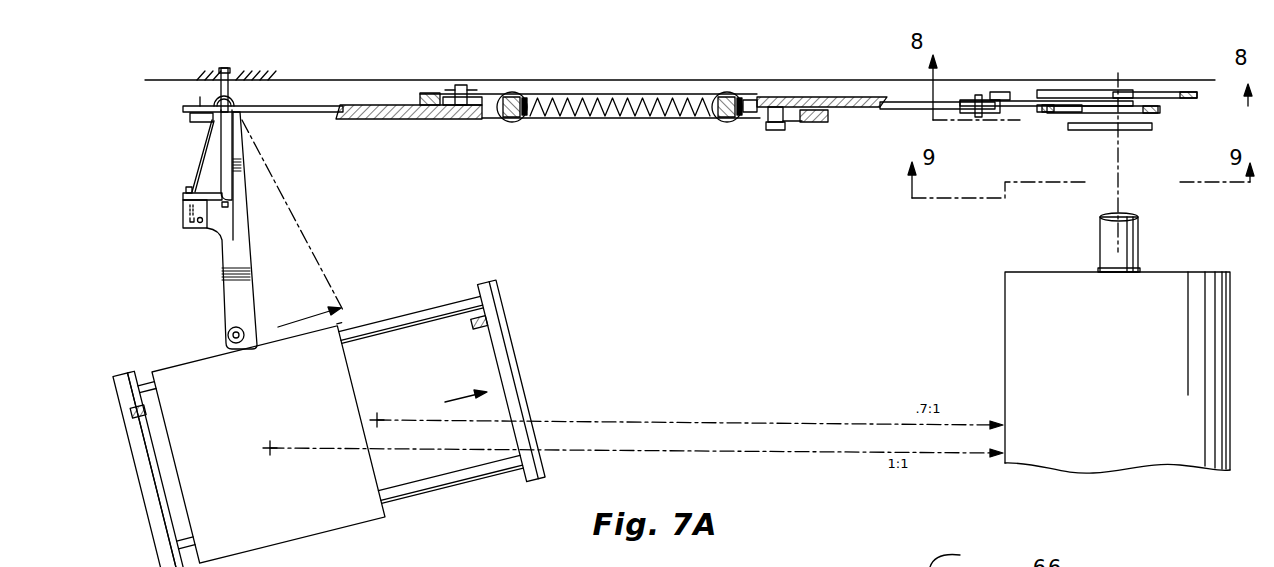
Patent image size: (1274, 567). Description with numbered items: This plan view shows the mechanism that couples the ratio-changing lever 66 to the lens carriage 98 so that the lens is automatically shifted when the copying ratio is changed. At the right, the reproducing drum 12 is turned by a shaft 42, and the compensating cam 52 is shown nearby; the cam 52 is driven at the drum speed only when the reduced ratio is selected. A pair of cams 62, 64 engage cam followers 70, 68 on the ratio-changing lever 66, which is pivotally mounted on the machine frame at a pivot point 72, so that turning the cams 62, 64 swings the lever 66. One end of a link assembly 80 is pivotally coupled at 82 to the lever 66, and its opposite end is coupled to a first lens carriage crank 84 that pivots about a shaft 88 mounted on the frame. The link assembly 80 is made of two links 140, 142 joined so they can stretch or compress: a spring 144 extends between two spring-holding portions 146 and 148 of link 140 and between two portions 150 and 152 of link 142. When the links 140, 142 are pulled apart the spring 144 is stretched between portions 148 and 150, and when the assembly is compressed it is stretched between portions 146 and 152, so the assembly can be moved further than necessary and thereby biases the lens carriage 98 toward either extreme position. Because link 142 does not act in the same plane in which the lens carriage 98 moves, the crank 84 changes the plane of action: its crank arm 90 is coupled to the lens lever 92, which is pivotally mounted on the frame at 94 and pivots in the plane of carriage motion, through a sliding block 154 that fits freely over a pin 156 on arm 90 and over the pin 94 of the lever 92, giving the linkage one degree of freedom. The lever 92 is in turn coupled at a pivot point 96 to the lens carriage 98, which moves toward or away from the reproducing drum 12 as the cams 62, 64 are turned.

The reproducing drum 12 is at (1207, 272).
The shaft 42 is at (1138, 233).
The compensating cam 52 is at (1110, 130).
The cam 62 is at (1073, 92).
The cam 64 is at (1160, 113).
The ratio-changing lever 66 is at (1027, 100).
The cam follower 68 is at (1045, 112).
The cam follower 70 is at (1127, 93).
The pivot point 72 is at (1000, 92).
The link assembly 80 is at (680, 125).
The pivot point 82 is at (970, 113).
The lens carriage crank 84 is at (227, 148).
The shaft 88 is at (235, 70).
The crank arm 90 is at (200, 192).
The lens lever 92 is at (247, 273).
The pivot 94 is at (237, 101).
The pivot point 96 is at (229, 334).
The lens carriage 98 is at (353, 381).
The link 140 is at (870, 110).
The link 142 is at (380, 120).
The spring 144 is at (605, 95).
The spring-holding portion 146 is at (515, 95).
The spring-holding portion 148 is at (732, 92).
The link portion 150 is at (510, 122).
The link portion 152 is at (728, 122).
The sliding block 154 is at (183, 222).
The pin 156 is at (186, 190).